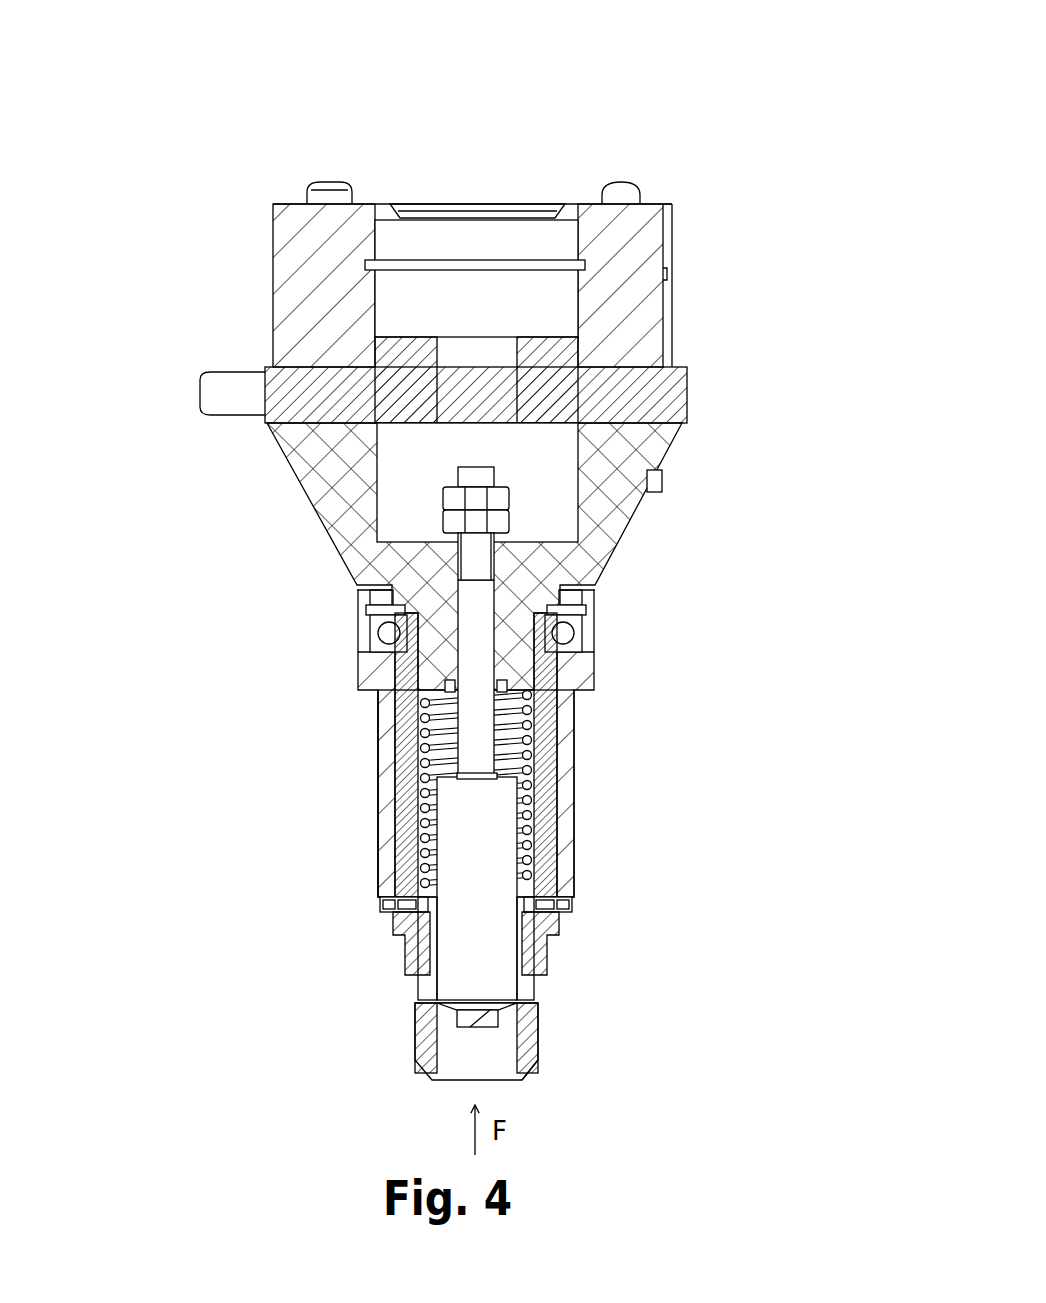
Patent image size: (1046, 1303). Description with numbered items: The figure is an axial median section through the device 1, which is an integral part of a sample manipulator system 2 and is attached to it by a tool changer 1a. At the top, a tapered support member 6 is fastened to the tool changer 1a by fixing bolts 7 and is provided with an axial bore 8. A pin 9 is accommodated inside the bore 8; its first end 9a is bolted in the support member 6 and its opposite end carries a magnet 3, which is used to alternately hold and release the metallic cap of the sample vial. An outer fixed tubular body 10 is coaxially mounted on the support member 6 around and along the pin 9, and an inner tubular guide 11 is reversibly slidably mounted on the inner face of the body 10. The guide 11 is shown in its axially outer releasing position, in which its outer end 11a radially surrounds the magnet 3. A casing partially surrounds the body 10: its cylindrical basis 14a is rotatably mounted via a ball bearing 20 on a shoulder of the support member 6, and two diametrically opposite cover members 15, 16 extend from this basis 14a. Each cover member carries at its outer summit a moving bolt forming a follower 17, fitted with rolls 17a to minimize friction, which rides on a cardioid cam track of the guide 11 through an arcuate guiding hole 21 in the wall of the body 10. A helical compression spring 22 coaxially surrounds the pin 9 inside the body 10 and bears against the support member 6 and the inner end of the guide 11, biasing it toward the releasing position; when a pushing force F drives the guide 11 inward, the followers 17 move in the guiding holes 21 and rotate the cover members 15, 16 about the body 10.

The device 1 is at (297, 913).
The tool changer 1a is at (267, 274).
The sample manipulator system 2 is at (434, 219).
The magnet 3 is at (462, 1015).
The tapered support member 6 is at (494, 556).
The fixing bolts 7 is at (667, 488).
The axial bore 8 is at (505, 622).
The pin 9 is at (482, 935).
The first end 9a is at (506, 542).
The outer fixed tubular body 10 is at (410, 850).
The inner tubular guide 11 is at (510, 1063).
The outer end 11a is at (527, 1068).
The cylindrical basis 14a is at (400, 743).
The cover member 15 is at (378, 782).
The cover member 16 is at (574, 775).
The follower 17 is at (516, 890).
The rolls 17a is at (568, 922).
The ball bearing 20 is at (368, 643).
The arcuate through guiding holes 21 is at (383, 897).
The helical compression spring 22 is at (535, 728).